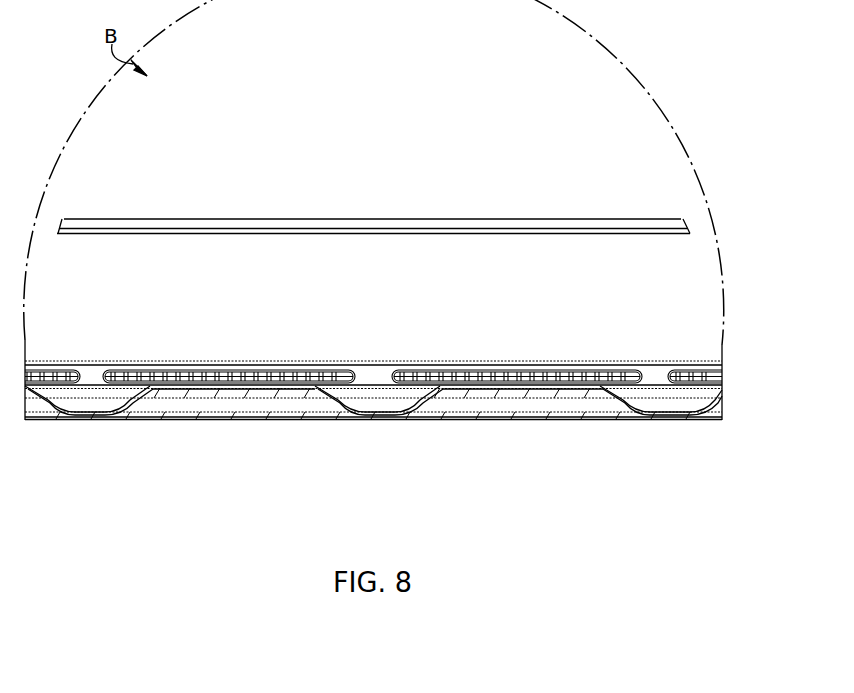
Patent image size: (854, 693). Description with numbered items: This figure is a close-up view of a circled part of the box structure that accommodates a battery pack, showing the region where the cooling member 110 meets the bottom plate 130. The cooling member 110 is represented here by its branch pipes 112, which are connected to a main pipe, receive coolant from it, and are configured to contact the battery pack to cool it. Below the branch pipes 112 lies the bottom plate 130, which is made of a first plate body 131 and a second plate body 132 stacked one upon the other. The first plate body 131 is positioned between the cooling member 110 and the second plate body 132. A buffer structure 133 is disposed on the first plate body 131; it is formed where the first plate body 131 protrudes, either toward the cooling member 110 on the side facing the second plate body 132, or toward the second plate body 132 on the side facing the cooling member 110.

The cooling member 110 is at (373, 348).
The branch pipe 112 is at (492, 386).
The bottom plate 130 is at (373, 450).
The first plate body 131 is at (326, 395).
The second plate body 132 is at (330, 478).
The buffer structure 133 is at (104, 403).